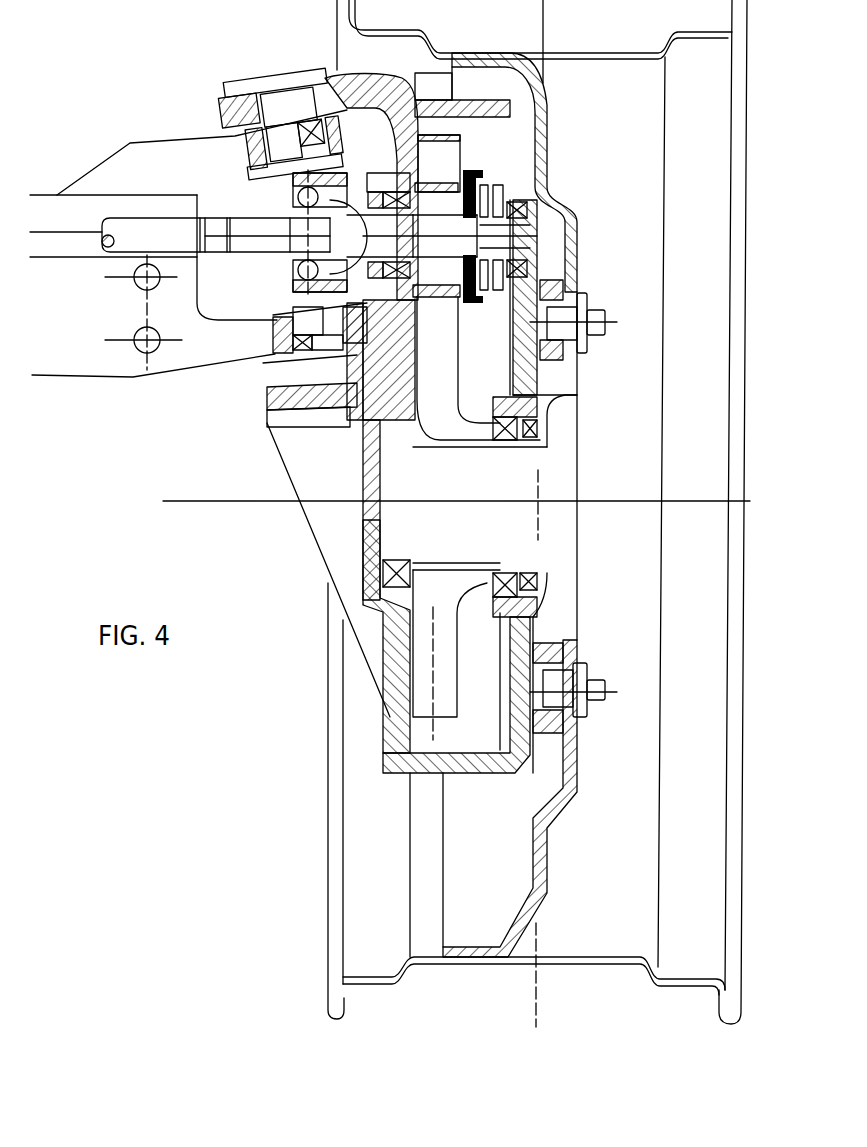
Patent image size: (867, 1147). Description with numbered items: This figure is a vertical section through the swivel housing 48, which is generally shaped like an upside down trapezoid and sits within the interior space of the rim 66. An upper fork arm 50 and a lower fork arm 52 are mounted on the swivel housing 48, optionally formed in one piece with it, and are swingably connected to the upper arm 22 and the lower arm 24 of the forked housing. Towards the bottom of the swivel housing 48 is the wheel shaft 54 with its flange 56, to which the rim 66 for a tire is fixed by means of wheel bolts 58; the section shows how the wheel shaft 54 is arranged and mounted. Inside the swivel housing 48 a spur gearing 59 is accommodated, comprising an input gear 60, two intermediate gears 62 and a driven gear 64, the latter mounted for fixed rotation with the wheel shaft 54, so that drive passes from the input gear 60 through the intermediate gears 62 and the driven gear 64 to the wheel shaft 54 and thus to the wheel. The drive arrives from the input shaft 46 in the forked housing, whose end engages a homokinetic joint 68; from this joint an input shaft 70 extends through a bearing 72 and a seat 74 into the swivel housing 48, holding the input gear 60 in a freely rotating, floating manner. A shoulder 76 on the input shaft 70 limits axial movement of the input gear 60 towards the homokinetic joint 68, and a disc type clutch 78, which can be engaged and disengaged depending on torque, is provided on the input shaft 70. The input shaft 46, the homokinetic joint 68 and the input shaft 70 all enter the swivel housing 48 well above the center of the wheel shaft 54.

The upper arm 22 is at (173, 140).
The lower arm 24 is at (207, 372).
The input shaft 46 is at (135, 217).
The swivel housing 48 is at (463, 103).
The upper fork arm 50 is at (333, 70).
The lower fork arm 52 is at (275, 421).
The wheel shaft 54 is at (467, 493).
The flange 56 is at (560, 628).
The wheel bolts 58 is at (587, 307).
The spur gearing 59 is at (500, 158).
The input gear 60 is at (466, 171).
The intermediate gears 62 is at (451, 165).
The driven gear 64 is at (451, 361).
The rim 66 is at (622, 970).
The homokinetic joint 68 is at (266, 286).
The input shaft 70 is at (391, 112).
The bearing 72 is at (273, 391).
The seat 74 is at (268, 361).
The shoulder 76 is at (420, 96).
The disc type clutch 78 is at (482, 320).